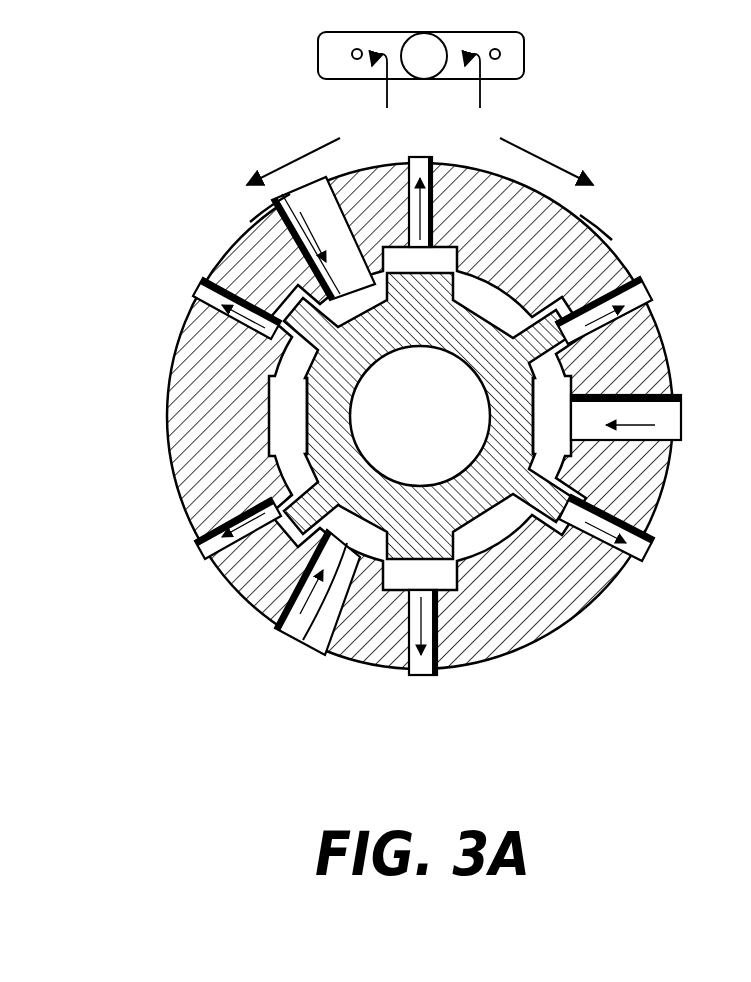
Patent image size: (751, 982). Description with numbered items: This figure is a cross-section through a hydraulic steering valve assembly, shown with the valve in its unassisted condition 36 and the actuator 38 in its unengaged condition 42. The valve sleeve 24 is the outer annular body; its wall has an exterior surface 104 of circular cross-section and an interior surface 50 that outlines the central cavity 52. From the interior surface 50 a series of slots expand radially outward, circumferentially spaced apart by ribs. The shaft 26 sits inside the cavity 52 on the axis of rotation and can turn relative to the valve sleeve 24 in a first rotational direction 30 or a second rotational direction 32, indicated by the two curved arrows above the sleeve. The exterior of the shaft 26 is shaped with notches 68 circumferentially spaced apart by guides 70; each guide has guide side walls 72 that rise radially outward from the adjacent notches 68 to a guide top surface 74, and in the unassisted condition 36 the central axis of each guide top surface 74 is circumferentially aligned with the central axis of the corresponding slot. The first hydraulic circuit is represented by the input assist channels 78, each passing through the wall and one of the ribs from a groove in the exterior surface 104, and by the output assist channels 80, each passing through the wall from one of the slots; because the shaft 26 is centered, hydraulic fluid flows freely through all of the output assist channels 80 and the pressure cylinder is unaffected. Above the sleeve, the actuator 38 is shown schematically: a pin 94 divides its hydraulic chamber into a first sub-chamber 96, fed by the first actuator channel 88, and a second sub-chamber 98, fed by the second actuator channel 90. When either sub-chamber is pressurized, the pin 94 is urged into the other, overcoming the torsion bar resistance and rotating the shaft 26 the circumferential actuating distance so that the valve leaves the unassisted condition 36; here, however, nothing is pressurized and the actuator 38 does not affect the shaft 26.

The valve sleeve 24 is at (160, 441).
The shaft 26 is at (484, 526).
The first rotational direction 30 is at (293, 159).
The second rotational direction 32 is at (546, 159).
The unassisted condition 36 is at (211, 249).
The actuator 38 is at (318, 34).
The unengaged condition 42 is at (532, 57).
The interior surface 50 is at (288, 392).
The cavity 52 is at (431, 428).
The notches 68 is at (330, 622).
The guides 70 is at (298, 487).
The guide side walls 72 is at (222, 528).
The guide top surface 74 is at (220, 563).
The input assist channels 78 is at (662, 416).
The output assist channels 80 is at (634, 290).
The first actuator channel 88 is at (352, 57).
The second actuator channel 90 is at (499, 51).
The pin 94 is at (435, 69).
The first sub-chamber 96 is at (385, 94).
The second sub-chamber 98 is at (479, 94).
The exterior surface 104 is at (596, 226).